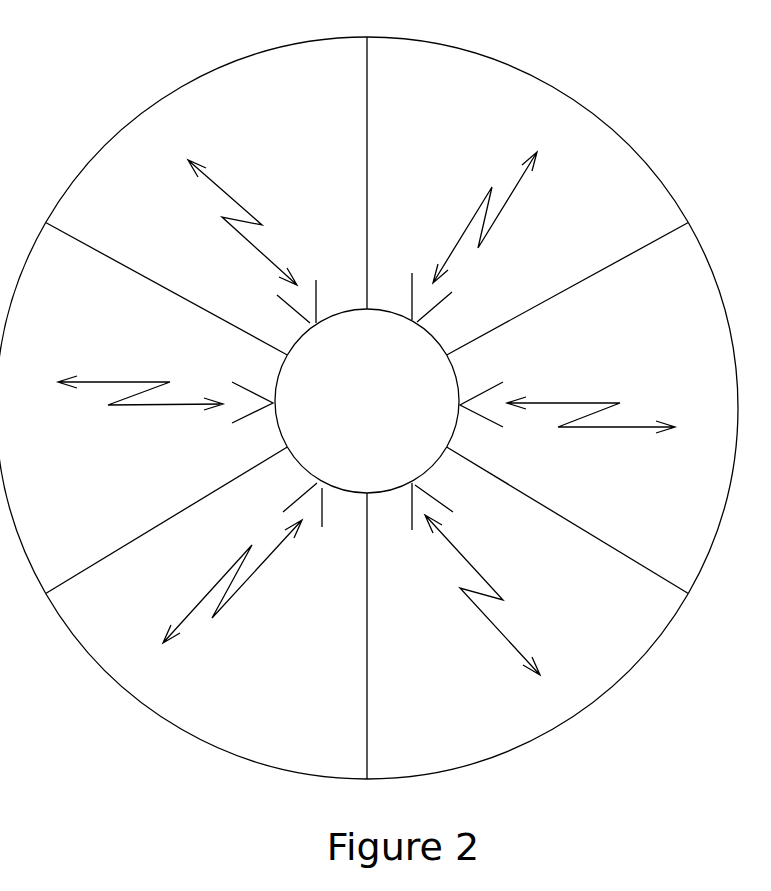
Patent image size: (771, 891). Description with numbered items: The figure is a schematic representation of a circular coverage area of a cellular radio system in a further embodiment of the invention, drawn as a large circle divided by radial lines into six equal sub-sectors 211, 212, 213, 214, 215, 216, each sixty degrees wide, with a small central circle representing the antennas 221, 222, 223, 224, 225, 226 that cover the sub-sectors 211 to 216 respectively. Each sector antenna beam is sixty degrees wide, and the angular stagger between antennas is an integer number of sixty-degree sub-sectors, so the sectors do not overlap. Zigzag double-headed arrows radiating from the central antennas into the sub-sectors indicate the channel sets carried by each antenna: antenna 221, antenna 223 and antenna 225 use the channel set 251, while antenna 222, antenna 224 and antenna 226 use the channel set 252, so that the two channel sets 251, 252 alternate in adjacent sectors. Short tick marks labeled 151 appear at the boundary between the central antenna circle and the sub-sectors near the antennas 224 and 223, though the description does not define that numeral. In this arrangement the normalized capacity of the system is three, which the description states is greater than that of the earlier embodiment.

The tick marks / coupling lines 151 is at (367, 427).
The sub-sector 211 is at (527, 196).
The sub-sector 212 is at (592, 408).
The sub-sector 213 is at (527, 636).
The sub-sector 214 is at (206, 613).
The sub-sector 215 is at (143, 408).
The sub-sector 216 is at (206, 173).
The antenna 221 is at (407, 337).
The antenna 222 is at (433, 401).
The antenna 223 is at (407, 470).
The antenna 224 is at (327, 470).
The antenna 225 is at (305, 401).
The antenna 226 is at (327, 337).
The channel set 251 is at (497, 218).
The channel set 252 is at (215, 185).